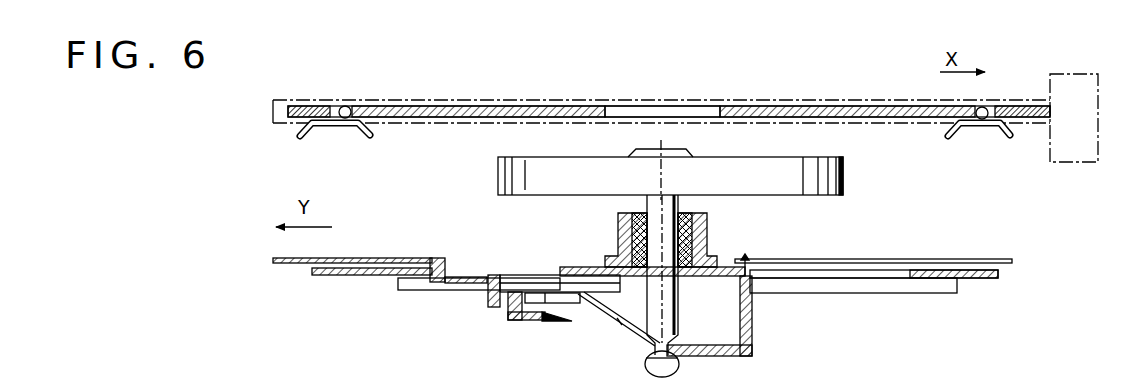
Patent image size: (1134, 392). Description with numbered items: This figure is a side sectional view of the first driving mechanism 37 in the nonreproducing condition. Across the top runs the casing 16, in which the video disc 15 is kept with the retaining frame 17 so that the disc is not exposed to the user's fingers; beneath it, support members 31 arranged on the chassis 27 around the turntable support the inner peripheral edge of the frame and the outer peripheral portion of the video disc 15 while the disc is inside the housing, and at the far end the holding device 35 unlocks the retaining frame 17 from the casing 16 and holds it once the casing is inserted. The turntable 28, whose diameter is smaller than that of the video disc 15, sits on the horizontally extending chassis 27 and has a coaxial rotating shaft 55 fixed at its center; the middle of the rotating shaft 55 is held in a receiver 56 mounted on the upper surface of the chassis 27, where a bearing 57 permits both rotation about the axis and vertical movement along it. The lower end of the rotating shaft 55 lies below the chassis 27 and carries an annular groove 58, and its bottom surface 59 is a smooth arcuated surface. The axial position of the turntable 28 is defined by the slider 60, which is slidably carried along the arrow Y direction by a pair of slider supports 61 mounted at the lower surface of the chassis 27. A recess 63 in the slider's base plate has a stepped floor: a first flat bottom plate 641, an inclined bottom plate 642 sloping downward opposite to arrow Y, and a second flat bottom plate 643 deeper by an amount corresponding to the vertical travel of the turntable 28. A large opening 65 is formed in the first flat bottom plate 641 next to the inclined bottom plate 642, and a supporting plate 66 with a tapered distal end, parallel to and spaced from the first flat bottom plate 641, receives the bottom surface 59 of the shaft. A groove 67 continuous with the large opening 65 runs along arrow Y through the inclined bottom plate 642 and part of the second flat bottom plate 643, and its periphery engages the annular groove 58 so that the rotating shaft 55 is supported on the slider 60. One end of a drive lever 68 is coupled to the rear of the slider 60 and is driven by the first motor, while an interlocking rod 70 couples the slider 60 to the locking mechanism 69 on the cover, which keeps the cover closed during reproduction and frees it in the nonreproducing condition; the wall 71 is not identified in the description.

The video disc 15 is at (796, 107).
The casing 16 is at (746, 106).
The retaining frame 17 is at (302, 106).
The support members 31 is at (330, 128).
The holding device 35 is at (1100, 103).
The turntable 28 is at (845, 180).
The annular groove 58 is at (676, 338).
The side wall 71 is at (752, 322).
The second flat bottom plate 643 is at (705, 356).
The recess 63 is at (750, 357).
The bottom surface 59 is at (662, 378).
The receiver 56 is at (618, 234).
The rotating shaft 55 is at (690, 206).
The bearing 57 is at (690, 247).
The interlocking rod 70 is at (372, 259).
The chassis 27 is at (335, 275).
The slider supports 61 is at (408, 290).
The drive lever 68 is at (972, 264).
The locking mechanism 69 is at (847, 281).
The first driving mechanism 37 is at (869, 308).
The slider 60 is at (491, 304).
The first flat bottom plate 641 is at (503, 306).
The supporting plate 66 is at (546, 320).
The large opening 65 is at (577, 303).
The inclined bottom plate 642 is at (650, 338).
The groove 67 is at (628, 313).